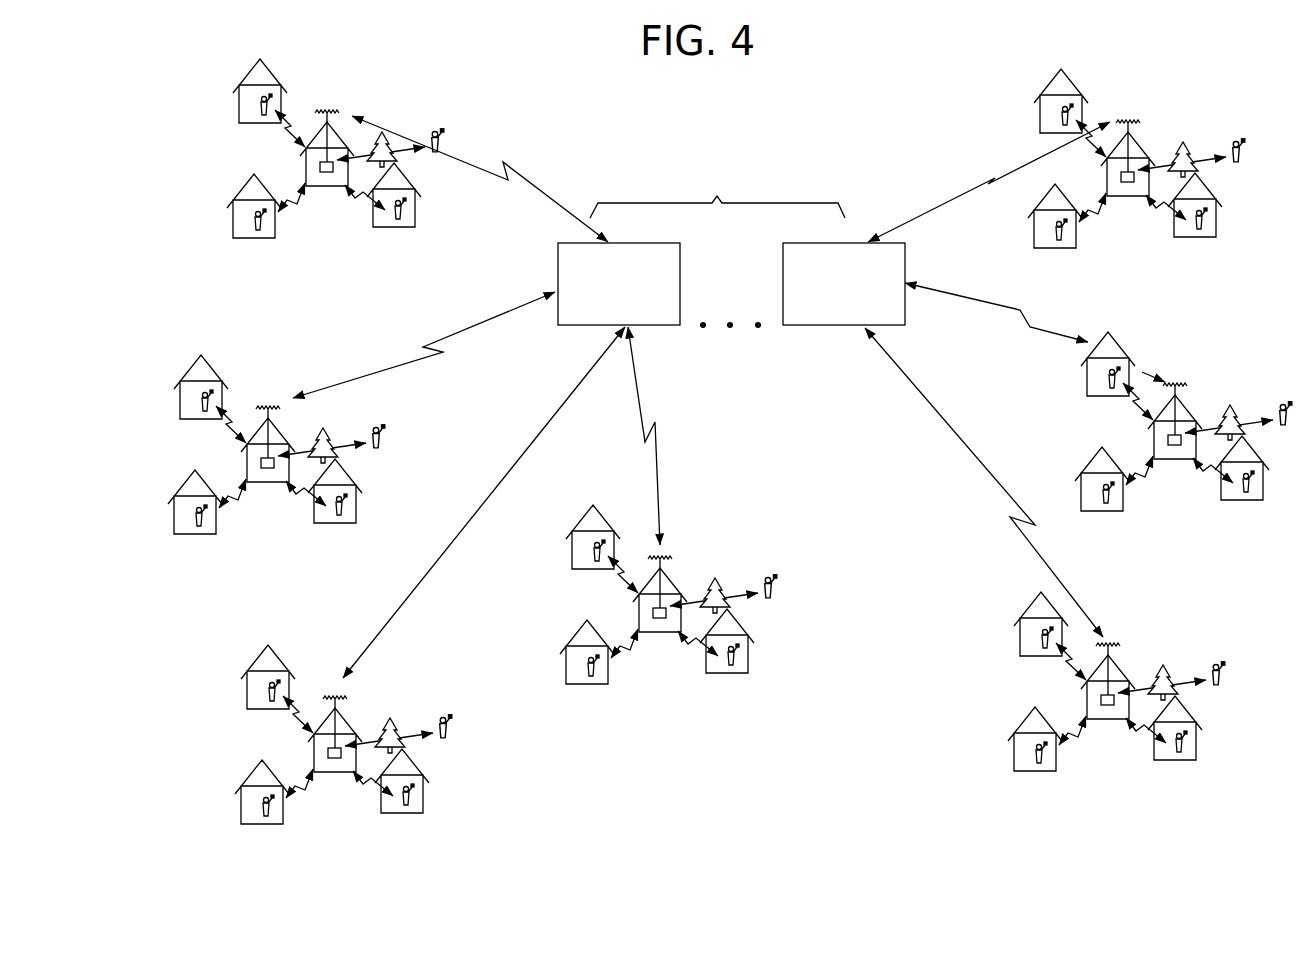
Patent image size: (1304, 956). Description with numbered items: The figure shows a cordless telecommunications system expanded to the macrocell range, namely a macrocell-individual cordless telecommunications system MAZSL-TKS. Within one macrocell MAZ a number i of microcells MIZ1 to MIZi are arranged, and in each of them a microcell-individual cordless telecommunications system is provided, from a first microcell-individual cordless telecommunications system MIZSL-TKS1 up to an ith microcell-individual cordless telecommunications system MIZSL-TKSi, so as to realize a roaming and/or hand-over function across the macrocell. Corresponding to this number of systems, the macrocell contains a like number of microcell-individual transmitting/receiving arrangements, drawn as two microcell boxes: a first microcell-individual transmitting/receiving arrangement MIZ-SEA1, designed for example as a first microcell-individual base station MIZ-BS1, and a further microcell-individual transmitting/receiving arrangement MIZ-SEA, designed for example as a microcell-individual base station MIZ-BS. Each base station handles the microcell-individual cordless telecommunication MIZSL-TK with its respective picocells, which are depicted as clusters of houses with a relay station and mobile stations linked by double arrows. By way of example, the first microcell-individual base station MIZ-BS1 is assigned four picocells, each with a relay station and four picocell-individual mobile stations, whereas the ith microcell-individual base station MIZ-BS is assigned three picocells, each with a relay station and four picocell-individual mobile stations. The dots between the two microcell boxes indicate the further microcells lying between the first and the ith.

The macrocell MAZ is at (717, 174).
The macrocell-individual cordless telecommunications system MAZSL-TKS is at (717, 191).
The first microcell MIZ1 is at (485, 441).
The ith microcell MIZi is at (1017, 420).
The first microcell-individual transmitting/receiving arrangement MIZ-SEA1 is at (655, 322).
The first microcell-individual base station MIZ-BS1 is at (660, 317).
The microcell-individual transmitting/receiving arrangement MIZ-SEA is at (841, 321).
The microcell-individual base station MIZ-BS is at (822, 317).
The first microcell-individual cordless telecommunications system MIZSL-TKS1 is at (553, 273).
The microcell-individual cordless telecommunication MIZSL-TK is at (575, 373).
The ith microcell-individual cordless telecommunications system MIZSL-TKSi is at (1098, 397).